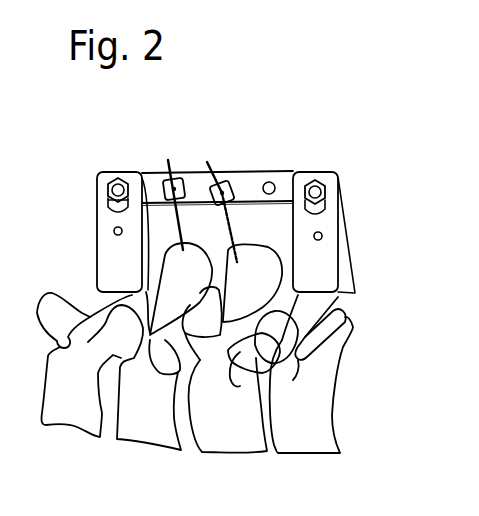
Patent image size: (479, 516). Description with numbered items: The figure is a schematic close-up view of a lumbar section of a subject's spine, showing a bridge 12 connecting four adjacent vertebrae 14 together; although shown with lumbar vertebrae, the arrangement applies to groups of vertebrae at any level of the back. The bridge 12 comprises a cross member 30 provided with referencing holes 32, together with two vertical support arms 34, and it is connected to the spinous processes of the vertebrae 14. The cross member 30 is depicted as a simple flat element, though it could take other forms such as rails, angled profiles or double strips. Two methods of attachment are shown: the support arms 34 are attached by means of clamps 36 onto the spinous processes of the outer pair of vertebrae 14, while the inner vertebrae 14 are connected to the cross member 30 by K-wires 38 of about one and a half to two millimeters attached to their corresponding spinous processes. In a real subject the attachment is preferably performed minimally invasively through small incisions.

The bridge 12 is at (341, 163).
The vertebrae 14 is at (48, 427).
The cross member 30 is at (292, 173).
The referencing holes 32 is at (268, 181).
The vertical support arms 34 is at (107, 224).
The clamps 36 is at (112, 268).
The K-wires 38 is at (238, 236).